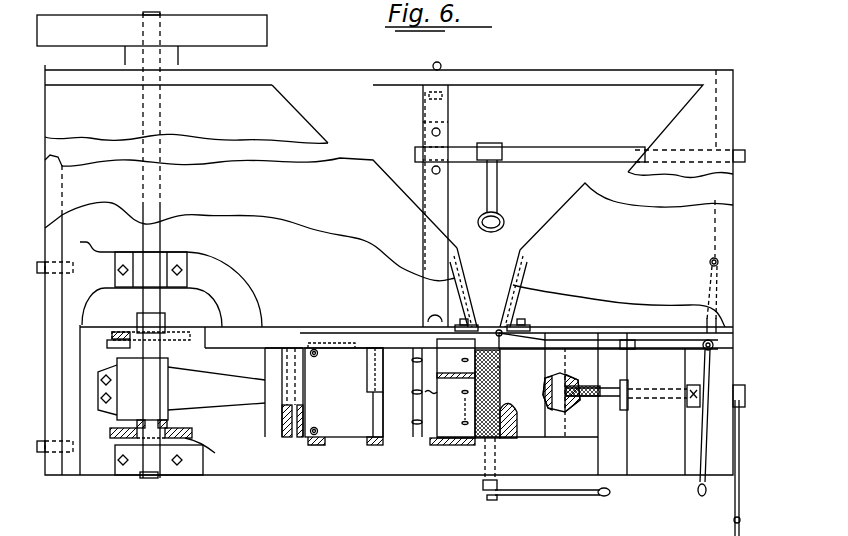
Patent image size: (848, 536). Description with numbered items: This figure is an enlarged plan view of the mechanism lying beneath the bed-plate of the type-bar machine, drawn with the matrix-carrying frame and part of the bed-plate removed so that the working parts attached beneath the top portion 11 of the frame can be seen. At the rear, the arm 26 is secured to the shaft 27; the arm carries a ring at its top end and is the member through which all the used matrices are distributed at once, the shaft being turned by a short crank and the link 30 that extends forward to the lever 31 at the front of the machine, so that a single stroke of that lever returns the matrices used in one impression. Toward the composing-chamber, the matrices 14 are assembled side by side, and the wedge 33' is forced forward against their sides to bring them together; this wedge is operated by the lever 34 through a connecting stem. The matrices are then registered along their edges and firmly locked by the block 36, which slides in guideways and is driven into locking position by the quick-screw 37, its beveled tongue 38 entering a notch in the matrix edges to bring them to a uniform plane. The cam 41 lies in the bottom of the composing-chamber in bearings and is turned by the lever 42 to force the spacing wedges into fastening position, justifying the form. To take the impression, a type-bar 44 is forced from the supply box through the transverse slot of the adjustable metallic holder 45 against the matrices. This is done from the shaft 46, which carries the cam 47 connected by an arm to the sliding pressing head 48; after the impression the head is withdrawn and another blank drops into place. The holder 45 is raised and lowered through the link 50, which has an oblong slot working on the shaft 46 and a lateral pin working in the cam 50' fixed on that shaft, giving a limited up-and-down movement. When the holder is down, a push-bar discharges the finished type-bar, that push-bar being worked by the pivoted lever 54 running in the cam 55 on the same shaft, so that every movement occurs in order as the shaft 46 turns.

The top portion 11 is at (391, 243).
The shaft 27 is at (530, 155).
The arm 26 is at (497, 187).
The shaft 46 is at (160, 237).
The cam 55 is at (176, 333).
The pivoted lever 54 is at (107, 345).
The cam 47 is at (200, 392).
The link 50 is at (164, 427).
The cam 50' is at (212, 451).
The pressing head 48 is at (344, 394).
The type-bar 44 is at (448, 496).
The holder 45 is at (455, 458).
The cam 41 is at (454, 398).
The matrices 14 is at (500, 385).
The beveled tongue 38 is at (500, 367).
The block 36 is at (559, 385).
The quick-screw 37 is at (618, 396).
The wedge 33' is at (608, 341).
The link 30 is at (666, 347).
The lever 34 is at (695, 424).
The lever 31 is at (735, 530).
The lever 42 is at (550, 493).